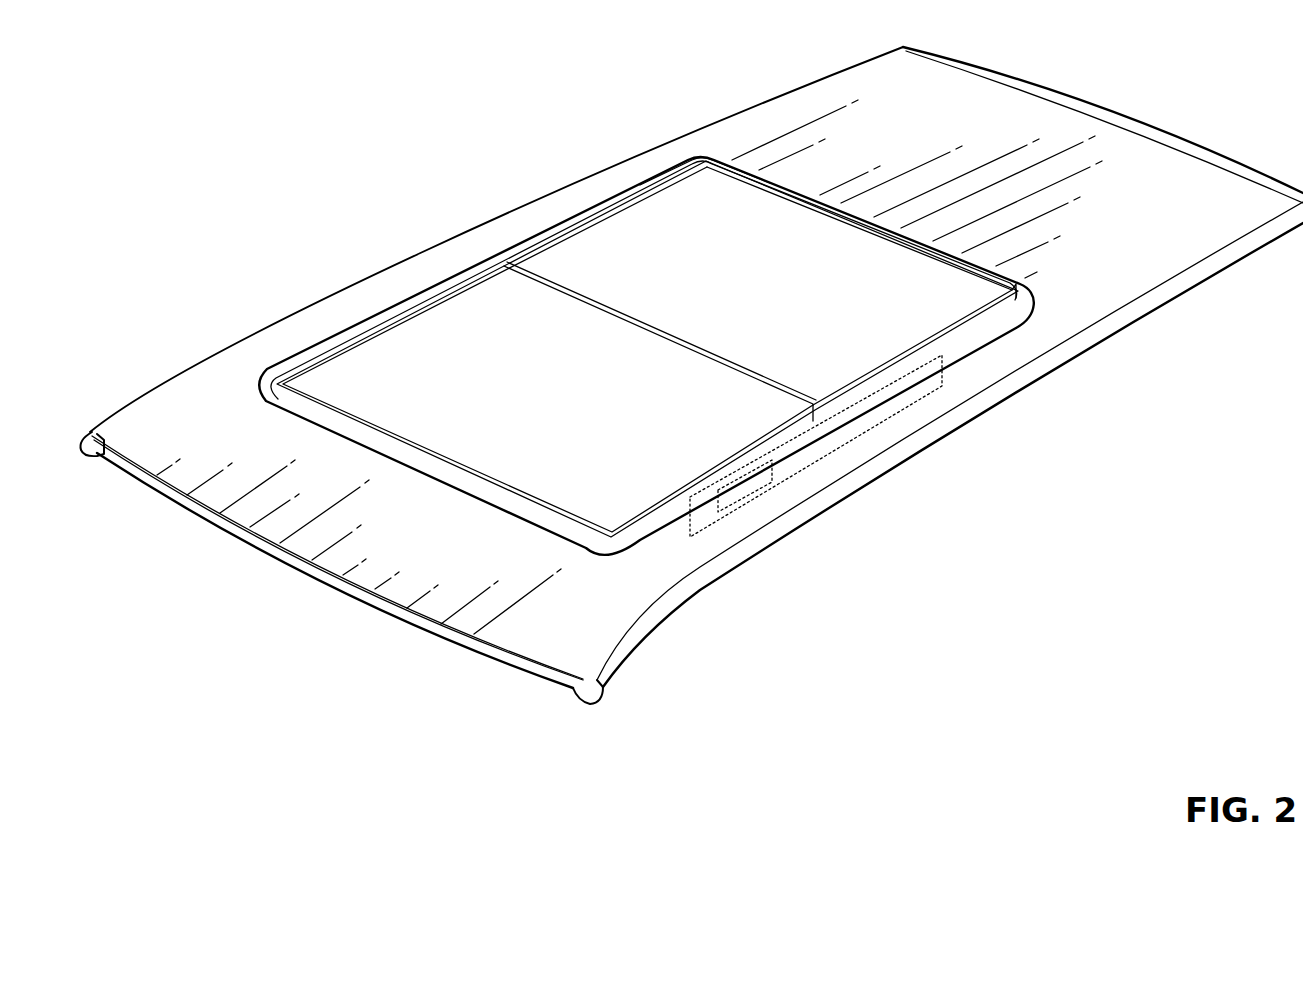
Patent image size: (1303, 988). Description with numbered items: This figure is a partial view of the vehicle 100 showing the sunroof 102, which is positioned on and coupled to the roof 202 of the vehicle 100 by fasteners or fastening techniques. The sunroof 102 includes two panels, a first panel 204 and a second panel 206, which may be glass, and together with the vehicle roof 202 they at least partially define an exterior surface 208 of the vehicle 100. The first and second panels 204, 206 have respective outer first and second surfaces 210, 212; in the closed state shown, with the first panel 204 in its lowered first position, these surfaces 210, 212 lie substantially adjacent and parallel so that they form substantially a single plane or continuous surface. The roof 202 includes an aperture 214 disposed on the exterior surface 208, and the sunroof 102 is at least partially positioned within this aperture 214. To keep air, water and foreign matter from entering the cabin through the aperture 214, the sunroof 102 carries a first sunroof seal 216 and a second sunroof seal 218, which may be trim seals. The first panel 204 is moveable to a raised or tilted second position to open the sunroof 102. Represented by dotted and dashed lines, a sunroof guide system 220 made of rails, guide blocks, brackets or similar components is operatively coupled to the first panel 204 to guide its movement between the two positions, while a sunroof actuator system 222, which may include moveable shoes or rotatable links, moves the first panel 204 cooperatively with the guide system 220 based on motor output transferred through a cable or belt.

The vehicle 100 is at (1256, 108).
The sunroof 102 is at (438, 266).
The roof 202 is at (202, 390).
The first panel 204 is at (413, 383).
The second panel 206 is at (804, 232).
The exterior surface 208 is at (917, 184).
The first surface 210 is at (548, 349).
The second surface 212 is at (859, 286).
The aperture 214 is at (706, 160).
The first sunroof seal 216 is at (626, 313).
The second sunroof seal 218 is at (1020, 293).
The sunroof guide system 220 is at (944, 384).
The sunroof actuator system 222 is at (774, 476).